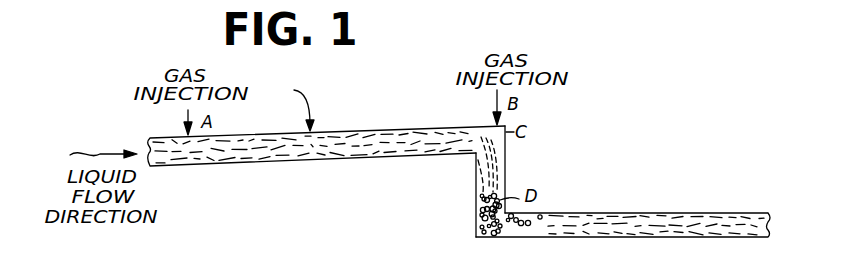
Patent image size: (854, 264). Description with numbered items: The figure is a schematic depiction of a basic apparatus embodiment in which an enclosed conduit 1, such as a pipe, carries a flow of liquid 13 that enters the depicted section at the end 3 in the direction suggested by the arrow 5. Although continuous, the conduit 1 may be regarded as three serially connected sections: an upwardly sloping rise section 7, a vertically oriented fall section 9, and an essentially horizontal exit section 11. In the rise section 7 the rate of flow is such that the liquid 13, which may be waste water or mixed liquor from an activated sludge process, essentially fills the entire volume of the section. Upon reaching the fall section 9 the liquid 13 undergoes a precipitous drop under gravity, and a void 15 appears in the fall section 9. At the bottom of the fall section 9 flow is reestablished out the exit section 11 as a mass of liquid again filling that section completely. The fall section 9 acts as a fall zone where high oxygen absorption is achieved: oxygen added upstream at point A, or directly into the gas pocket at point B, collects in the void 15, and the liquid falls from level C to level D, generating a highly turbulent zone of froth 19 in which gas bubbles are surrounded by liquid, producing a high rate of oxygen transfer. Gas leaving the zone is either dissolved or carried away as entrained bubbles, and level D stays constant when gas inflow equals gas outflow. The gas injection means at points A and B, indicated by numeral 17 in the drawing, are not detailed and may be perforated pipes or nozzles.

The enclosed conduit 1 is at (298, 105).
The end 3 is at (158, 137).
The arrow 5 is at (93, 152).
The rise section 7 is at (255, 136).
The fall section 9 is at (490, 168).
The exit section 11 is at (704, 213).
The liquid 13 is at (394, 141).
The void 15 is at (506, 128).
The gas injection point 17 is at (494, 98).
The frothy gas transferring mass 19 is at (479, 200).